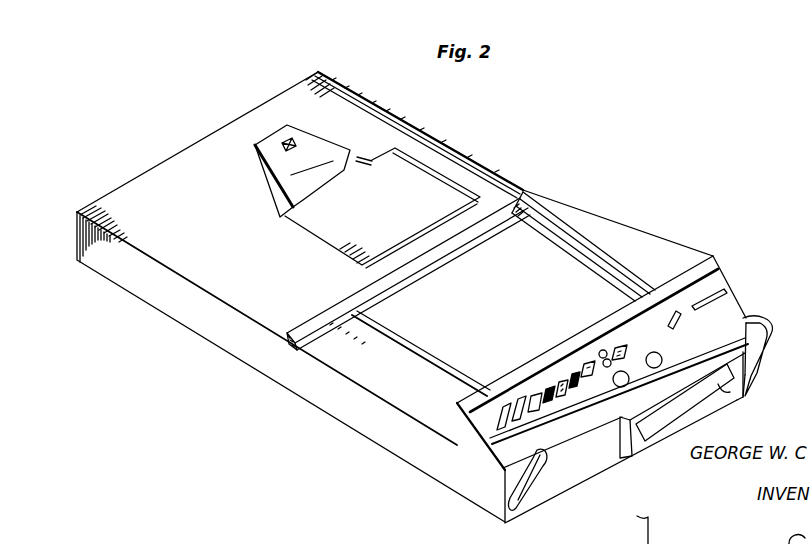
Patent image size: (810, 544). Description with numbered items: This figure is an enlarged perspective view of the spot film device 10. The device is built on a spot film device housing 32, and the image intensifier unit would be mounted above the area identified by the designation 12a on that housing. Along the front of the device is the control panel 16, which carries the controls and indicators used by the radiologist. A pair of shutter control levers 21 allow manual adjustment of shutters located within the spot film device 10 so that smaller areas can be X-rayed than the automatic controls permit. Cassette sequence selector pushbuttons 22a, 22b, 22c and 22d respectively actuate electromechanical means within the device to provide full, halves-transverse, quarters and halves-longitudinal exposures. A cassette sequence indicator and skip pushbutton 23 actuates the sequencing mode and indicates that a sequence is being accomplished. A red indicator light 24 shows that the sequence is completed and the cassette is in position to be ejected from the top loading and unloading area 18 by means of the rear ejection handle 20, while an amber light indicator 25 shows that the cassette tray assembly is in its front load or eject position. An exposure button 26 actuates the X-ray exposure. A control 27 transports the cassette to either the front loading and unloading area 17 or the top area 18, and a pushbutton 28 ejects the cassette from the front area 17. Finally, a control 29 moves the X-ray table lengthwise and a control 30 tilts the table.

The spot film device 10 is at (557, 186).
The area for image intensifier unit 12a is at (500, 287).
The control panel 16 is at (740, 318).
The front loading and unloading area 17 is at (740, 393).
The top loading and unloading area 18 is at (384, 224).
The rear ejection handle 20 is at (285, 176).
The shutter control levers 21 is at (477, 414).
The cassette sequence selector pushbutton 22a is at (530, 393).
The cassette sequence selector pushbutton 22b is at (553, 407).
The cassette sequence selector pushbutton 22c is at (560, 379).
The cassette sequence selector pushbutton 22d is at (581, 389).
The cassette sequence indicator and skip pushbutton 23 is at (587, 362).
The red indicator light 24 is at (603, 349).
The amber light indicator 25 is at (592, 440).
The exposure button 26 is at (618, 388).
The cassette transport control 27 is at (620, 351).
The cassette ejection pushbutton 28 is at (662, 356).
The table lengthwise movement control 29 is at (680, 311).
The table tilt control 30 is at (725, 292).
The spot film device housing 32 is at (228, 343).